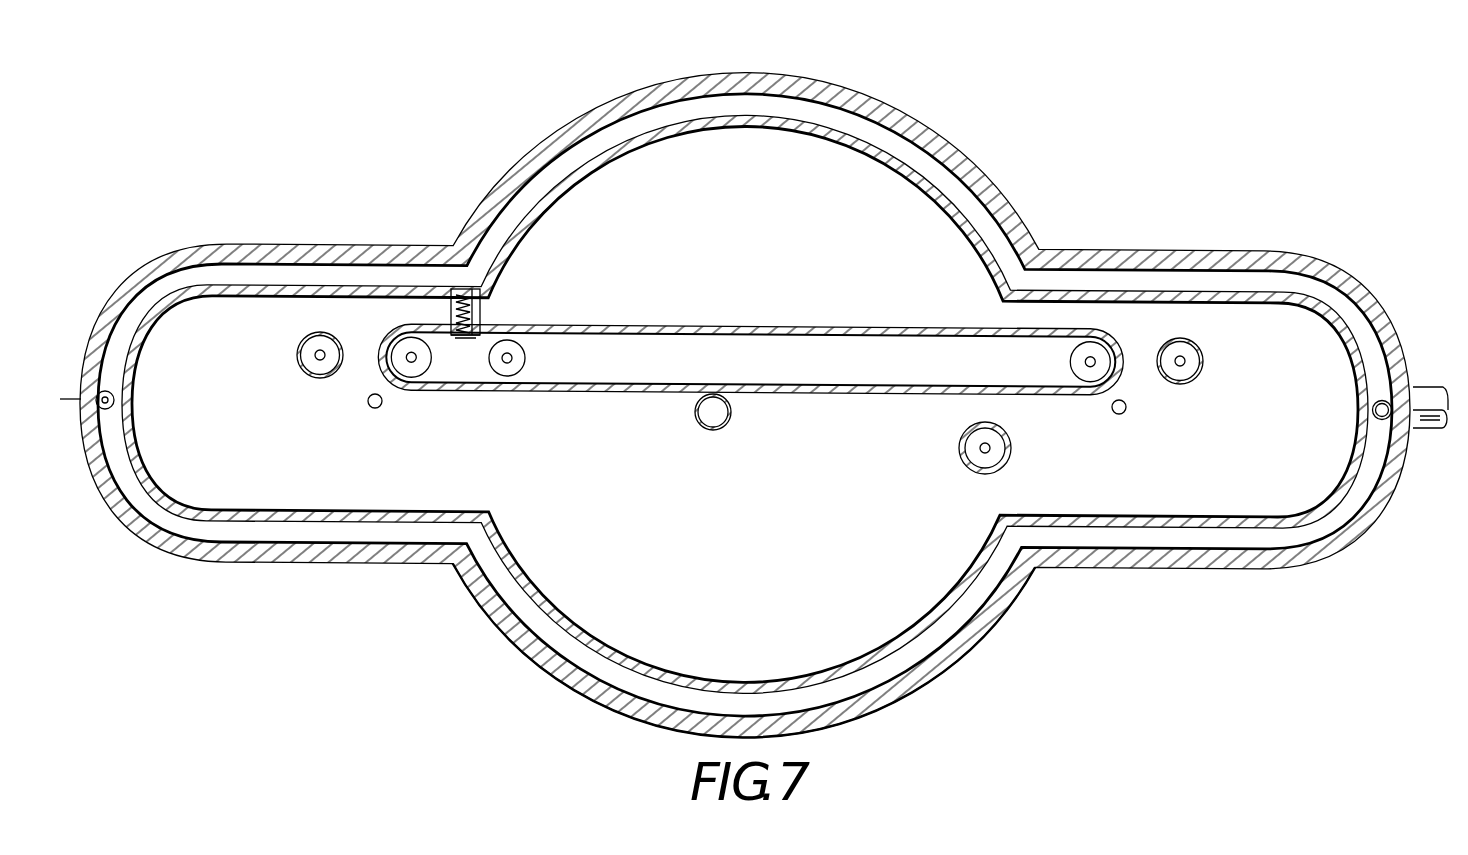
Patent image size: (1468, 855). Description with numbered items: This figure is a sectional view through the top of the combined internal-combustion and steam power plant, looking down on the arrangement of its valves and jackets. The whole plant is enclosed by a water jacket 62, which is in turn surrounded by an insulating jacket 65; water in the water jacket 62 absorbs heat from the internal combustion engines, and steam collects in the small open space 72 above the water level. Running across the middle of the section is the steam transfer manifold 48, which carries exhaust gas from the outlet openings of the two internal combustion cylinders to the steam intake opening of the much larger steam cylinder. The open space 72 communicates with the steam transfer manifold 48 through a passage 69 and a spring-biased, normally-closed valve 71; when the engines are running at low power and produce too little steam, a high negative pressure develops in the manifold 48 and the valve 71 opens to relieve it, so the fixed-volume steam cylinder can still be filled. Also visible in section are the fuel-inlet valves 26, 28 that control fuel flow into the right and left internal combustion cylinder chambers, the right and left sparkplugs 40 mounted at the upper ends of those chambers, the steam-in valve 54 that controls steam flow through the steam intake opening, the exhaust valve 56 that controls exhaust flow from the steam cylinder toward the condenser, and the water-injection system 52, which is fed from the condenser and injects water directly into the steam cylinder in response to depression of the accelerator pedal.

The insulating jacket 65 is at (255, 245).
The water jacket 62 is at (330, 263).
The open space 72 is at (1098, 282).
The passage 69 is at (481, 313).
The spring-biased, normally-closed valve 71 is at (457, 337).
The steam transfer manifold 48 is at (1105, 328).
The steam-in valve 54 is at (526, 358).
The fuel-inlet valve 28 is at (303, 345).
The fuel-inlet valve 26 is at (1185, 361).
The water-injection system 52 is at (699, 426).
The exhaust valve 56 is at (960, 447).
The sparkplug 40 is at (369, 406).